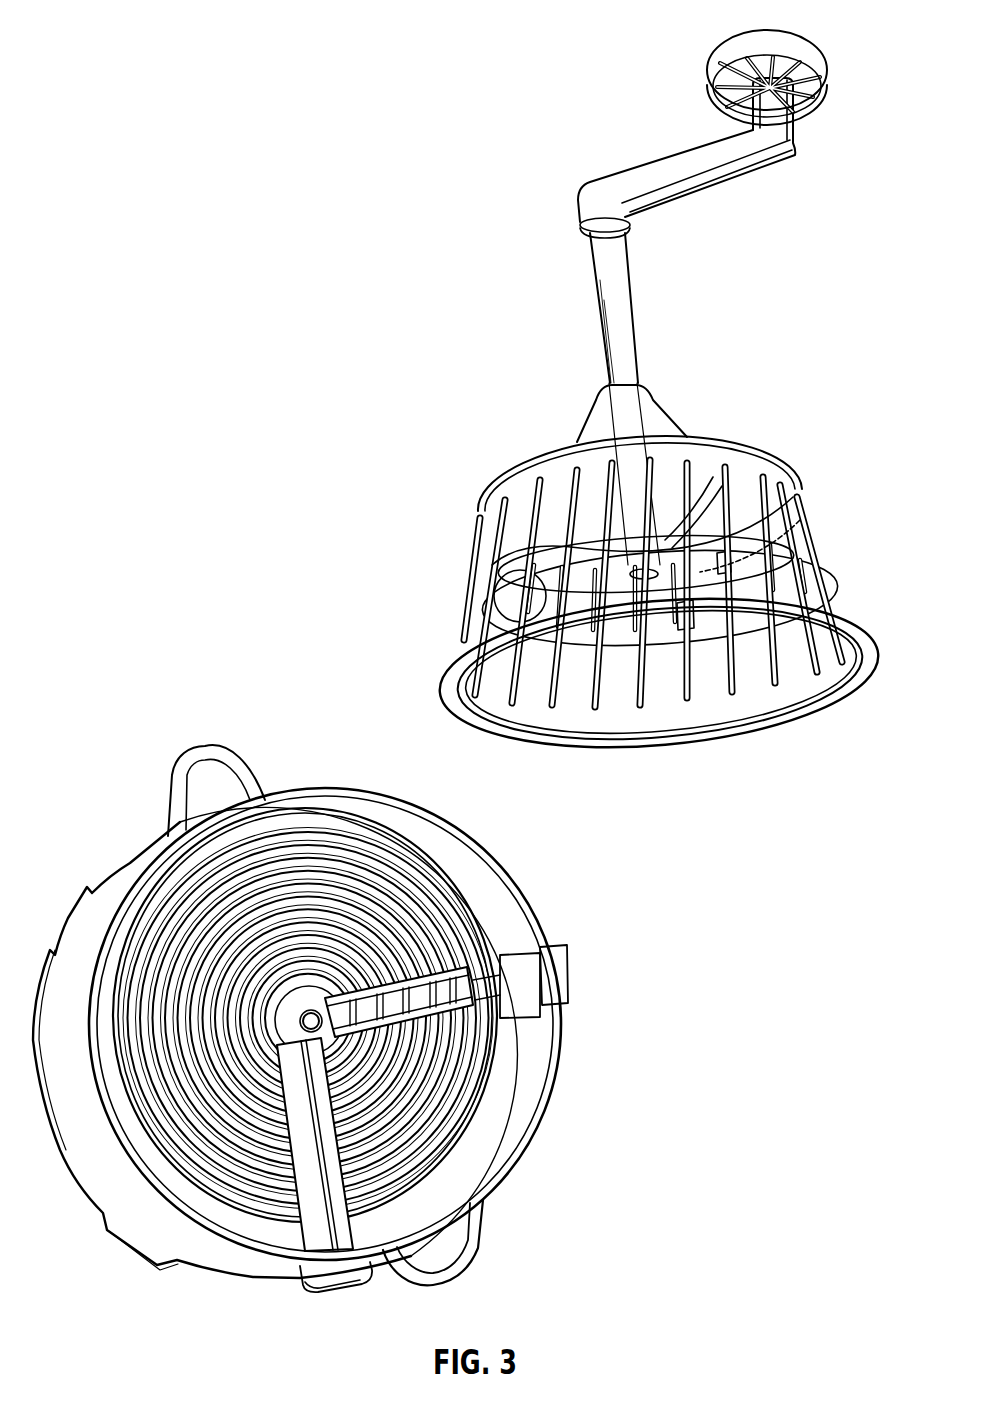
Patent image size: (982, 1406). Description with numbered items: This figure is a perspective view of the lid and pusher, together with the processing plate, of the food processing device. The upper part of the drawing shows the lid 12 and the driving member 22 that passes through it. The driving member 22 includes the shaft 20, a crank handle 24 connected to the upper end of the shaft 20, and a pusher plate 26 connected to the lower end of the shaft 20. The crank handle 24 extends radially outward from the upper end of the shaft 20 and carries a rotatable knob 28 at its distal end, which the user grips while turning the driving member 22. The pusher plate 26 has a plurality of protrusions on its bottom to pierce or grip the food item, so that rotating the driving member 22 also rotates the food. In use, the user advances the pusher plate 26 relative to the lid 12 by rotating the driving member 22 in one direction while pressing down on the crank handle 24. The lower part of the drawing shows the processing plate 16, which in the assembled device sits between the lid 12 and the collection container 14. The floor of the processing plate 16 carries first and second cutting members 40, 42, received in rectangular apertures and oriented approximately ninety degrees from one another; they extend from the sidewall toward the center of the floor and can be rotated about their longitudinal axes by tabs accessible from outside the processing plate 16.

The lid 12 is at (832, 398).
The collection container 14 is at (450, 806).
The processing plate 16 is at (150, 887).
The shaft 20 is at (622, 320).
The driving member 22 is at (622, 148).
The crank handle 24 is at (717, 160).
The pusher plate 26 is at (790, 552).
The rotatable knob 28 is at (786, 40).
The first cutting member 40 is at (322, 1218).
The second cutting member 42 is at (467, 992).